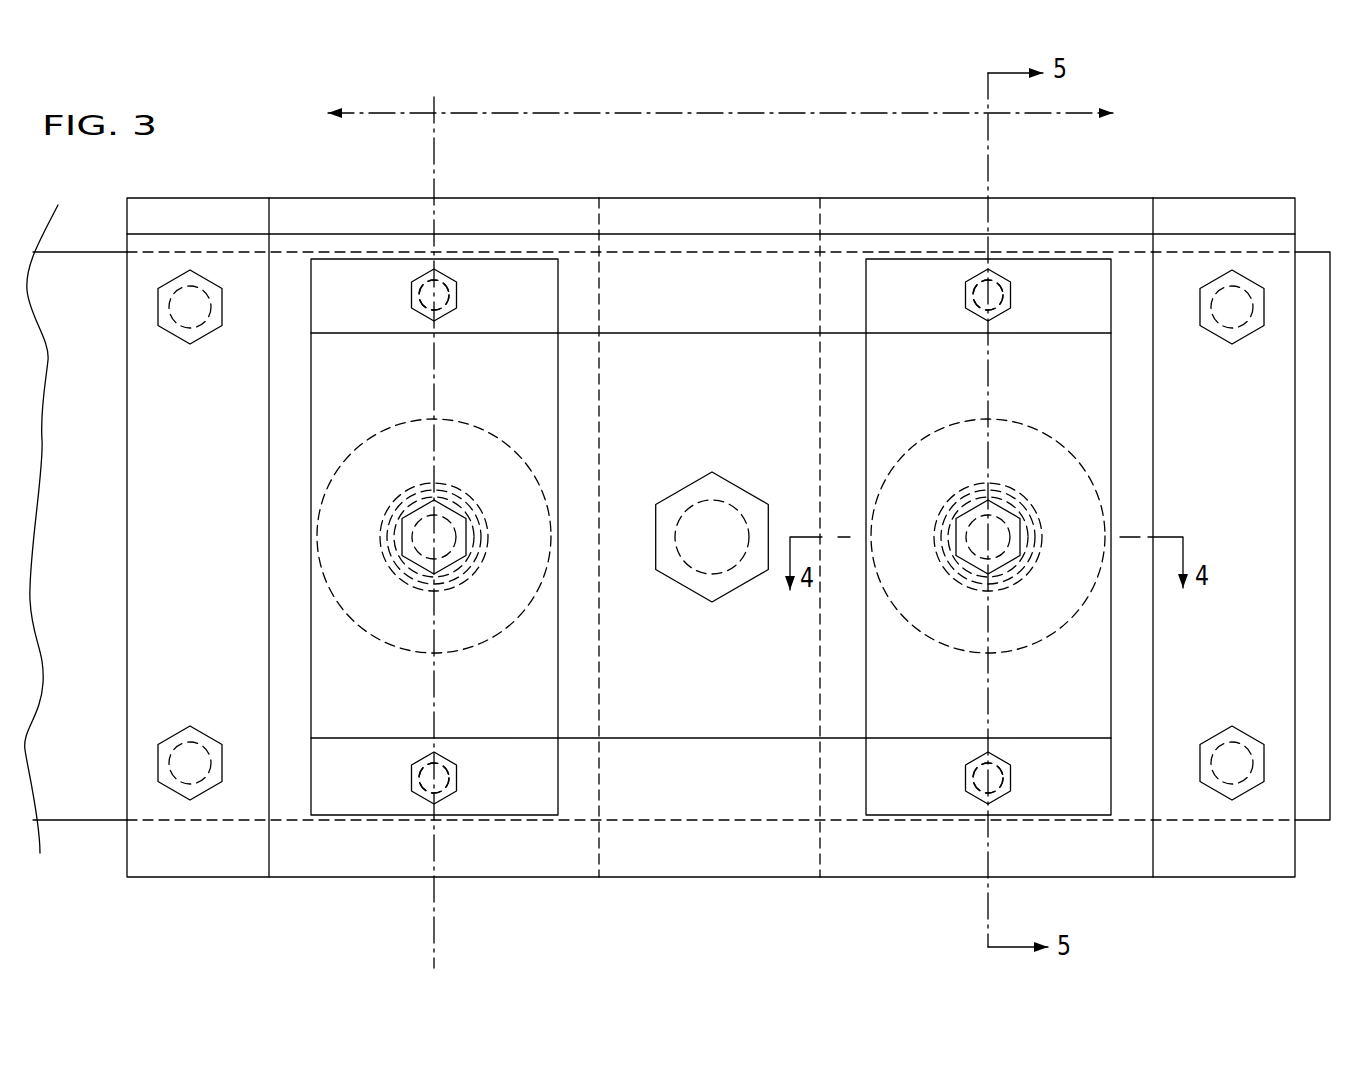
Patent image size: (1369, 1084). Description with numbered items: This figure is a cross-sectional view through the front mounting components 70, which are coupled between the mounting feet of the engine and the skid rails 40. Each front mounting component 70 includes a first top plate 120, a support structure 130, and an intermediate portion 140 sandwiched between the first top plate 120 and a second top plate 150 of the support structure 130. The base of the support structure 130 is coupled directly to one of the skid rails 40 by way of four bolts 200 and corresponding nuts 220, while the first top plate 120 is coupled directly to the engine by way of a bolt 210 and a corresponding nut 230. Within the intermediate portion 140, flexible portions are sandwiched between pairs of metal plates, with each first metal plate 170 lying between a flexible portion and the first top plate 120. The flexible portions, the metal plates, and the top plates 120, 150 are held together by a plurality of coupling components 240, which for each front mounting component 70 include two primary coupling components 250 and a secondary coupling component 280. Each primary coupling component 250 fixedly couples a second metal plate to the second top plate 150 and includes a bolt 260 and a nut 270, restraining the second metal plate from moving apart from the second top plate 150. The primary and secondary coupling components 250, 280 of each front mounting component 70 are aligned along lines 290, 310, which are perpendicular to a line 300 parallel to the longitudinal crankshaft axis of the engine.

The skid rail 40 is at (78, 822).
The front mounting component 70 is at (1298, 782).
The first top plate 120 is at (750, 705).
The support structure 130 is at (1222, 882).
The intermediate portion 140 is at (305, 487).
The second top plate 150 is at (269, 612).
The first metal plate 170 is at (407, 417).
The bolt 200 is at (175, 332).
The bolt 210 is at (683, 512).
The nut 220 is at (711, 591).
The nut 230 is at (684, 587).
The coupling component 240 is at (408, 277).
The primary coupling component 250 is at (462, 295).
The bolt 260 is at (412, 293).
The nut 270 is at (705, 549).
The secondary coupling component 280 is at (505, 520).
The line 290 is at (437, 142).
The line 300 is at (717, 113).
The line 310 is at (990, 148).